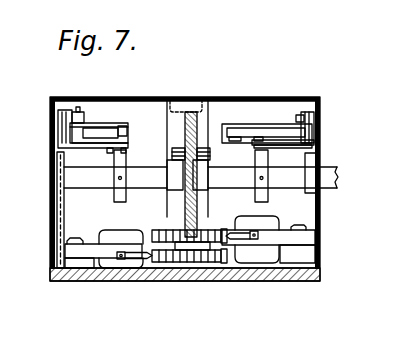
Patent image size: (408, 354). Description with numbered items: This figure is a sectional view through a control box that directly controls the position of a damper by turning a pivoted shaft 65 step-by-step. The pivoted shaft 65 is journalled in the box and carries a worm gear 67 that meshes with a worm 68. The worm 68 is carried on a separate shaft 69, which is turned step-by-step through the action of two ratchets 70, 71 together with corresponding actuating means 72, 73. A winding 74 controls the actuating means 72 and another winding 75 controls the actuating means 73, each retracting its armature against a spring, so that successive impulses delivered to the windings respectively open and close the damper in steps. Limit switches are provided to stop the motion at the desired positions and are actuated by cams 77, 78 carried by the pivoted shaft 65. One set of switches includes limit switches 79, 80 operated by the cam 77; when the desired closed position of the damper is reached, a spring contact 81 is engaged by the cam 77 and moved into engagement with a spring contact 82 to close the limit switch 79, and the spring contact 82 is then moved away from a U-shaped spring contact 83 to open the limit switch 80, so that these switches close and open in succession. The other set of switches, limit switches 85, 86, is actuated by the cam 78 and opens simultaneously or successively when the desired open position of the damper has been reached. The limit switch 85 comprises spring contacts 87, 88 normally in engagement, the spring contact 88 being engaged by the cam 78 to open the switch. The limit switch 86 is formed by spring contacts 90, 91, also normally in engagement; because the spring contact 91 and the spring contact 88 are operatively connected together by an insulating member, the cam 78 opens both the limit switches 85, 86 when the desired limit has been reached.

The pivoted shaft 65 is at (326, 176).
The worm gear 67 is at (195, 145).
The worm 68 is at (201, 155).
The worm shaft 69 is at (179, 100).
The ratchet 70 is at (218, 229).
The ratchet 71 is at (217, 262).
The actuating means 72 is at (265, 240).
The actuating means 73 is at (120, 236).
The winding 74 is at (271, 224).
The winding 75 is at (117, 265).
The cam 77 is at (266, 195).
The cam 78 is at (114, 197).
The limit switch 79 is at (264, 138).
The limit switch 80 is at (243, 124).
The spring contact 81 is at (288, 146).
The spring contact 82 is at (279, 133).
The U-shaped spring contact 83 is at (315, 98).
The limit switch 85 is at (129, 147).
The limit switch 86 is at (123, 120).
The spring contact 87 is at (102, 149).
The spring contact 88 is at (84, 152).
The spring contact 90 is at (98, 133).
The spring contact 91 is at (85, 126).